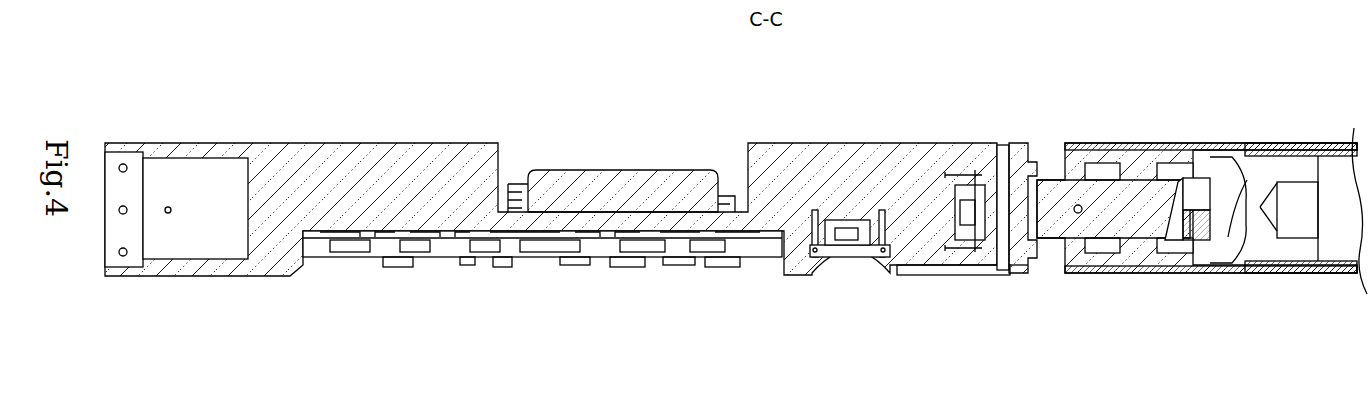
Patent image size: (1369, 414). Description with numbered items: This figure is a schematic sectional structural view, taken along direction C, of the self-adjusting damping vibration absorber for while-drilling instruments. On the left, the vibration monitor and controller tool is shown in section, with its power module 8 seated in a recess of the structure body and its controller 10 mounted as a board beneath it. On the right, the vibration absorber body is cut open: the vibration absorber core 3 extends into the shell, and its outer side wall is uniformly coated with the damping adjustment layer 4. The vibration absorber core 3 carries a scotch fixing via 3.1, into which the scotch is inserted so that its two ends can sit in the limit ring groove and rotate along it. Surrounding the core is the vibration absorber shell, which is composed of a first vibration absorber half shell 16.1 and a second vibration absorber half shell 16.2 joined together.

The vibration absorber core 3 is at (1113, 148).
The scotch fixing via 3.1 is at (1082, 203).
The damping adjustment layer 4 is at (1153, 238).
The power module 8 is at (604, 182).
The controller 10 is at (476, 240).
The first vibration absorber half shell 16.1 is at (1224, 238).
The second vibration absorber half shell 16.2 is at (1280, 184).